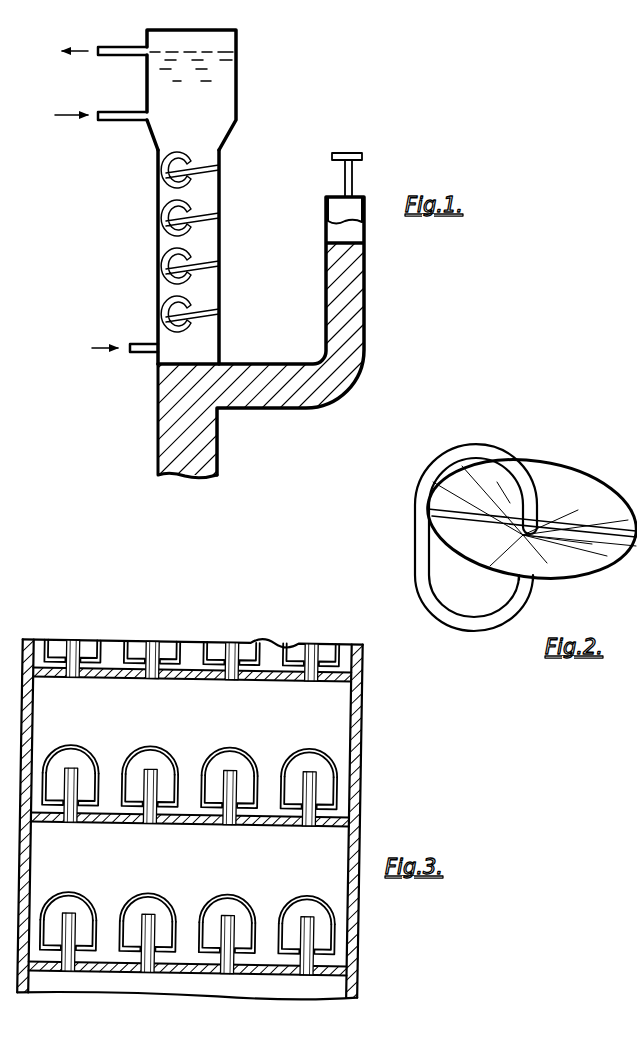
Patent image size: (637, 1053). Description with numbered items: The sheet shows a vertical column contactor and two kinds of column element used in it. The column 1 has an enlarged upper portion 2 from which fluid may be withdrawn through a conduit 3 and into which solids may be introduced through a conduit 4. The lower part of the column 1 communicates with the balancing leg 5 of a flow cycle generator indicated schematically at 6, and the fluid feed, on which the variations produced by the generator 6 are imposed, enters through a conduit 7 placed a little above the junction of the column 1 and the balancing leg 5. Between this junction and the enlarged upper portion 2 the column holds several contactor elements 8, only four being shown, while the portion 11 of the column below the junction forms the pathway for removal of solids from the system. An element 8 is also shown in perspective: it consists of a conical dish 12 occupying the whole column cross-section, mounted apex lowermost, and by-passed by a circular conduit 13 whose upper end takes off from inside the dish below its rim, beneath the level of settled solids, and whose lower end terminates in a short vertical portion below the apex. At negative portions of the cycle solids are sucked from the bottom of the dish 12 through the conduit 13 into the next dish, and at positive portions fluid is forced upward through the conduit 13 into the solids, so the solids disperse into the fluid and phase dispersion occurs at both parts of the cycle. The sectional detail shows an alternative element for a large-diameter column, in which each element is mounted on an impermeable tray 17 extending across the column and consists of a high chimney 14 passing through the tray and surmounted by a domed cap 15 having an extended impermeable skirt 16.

In FIG. 1, the column 1 is at (222, 241).
In FIG. 1, the enlarged upper portion 2 is at (239, 84).
In FIG. 1, the conduit 3 is at (118, 47).
In FIG. 1, the conduit 4 is at (120, 122).
In FIG. 1, the balancing leg 5 is at (366, 280).
In FIG. 1, the flow cycle generator 6 is at (366, 160).
In FIG. 1, the conduit 7 is at (134, 354).
In FIG. 1, the contactor element 8 is at (160, 226).
In FIG. 2, the contactor element 8 is at (411, 549).
In FIG. 1, the portion 11 is at (200, 458).
In FIG. 2, the conical dish 12 is at (590, 490).
In FIG. 2, the circular conduit 13 is at (545, 498).
In FIG. 3, the chimney 14 is at (308, 825).
In FIG. 3, the domed cap 15 is at (300, 750).
In FIG. 3, the skirt 16 is at (338, 792).
In FIG. 3, the tray 17 is at (263, 826).